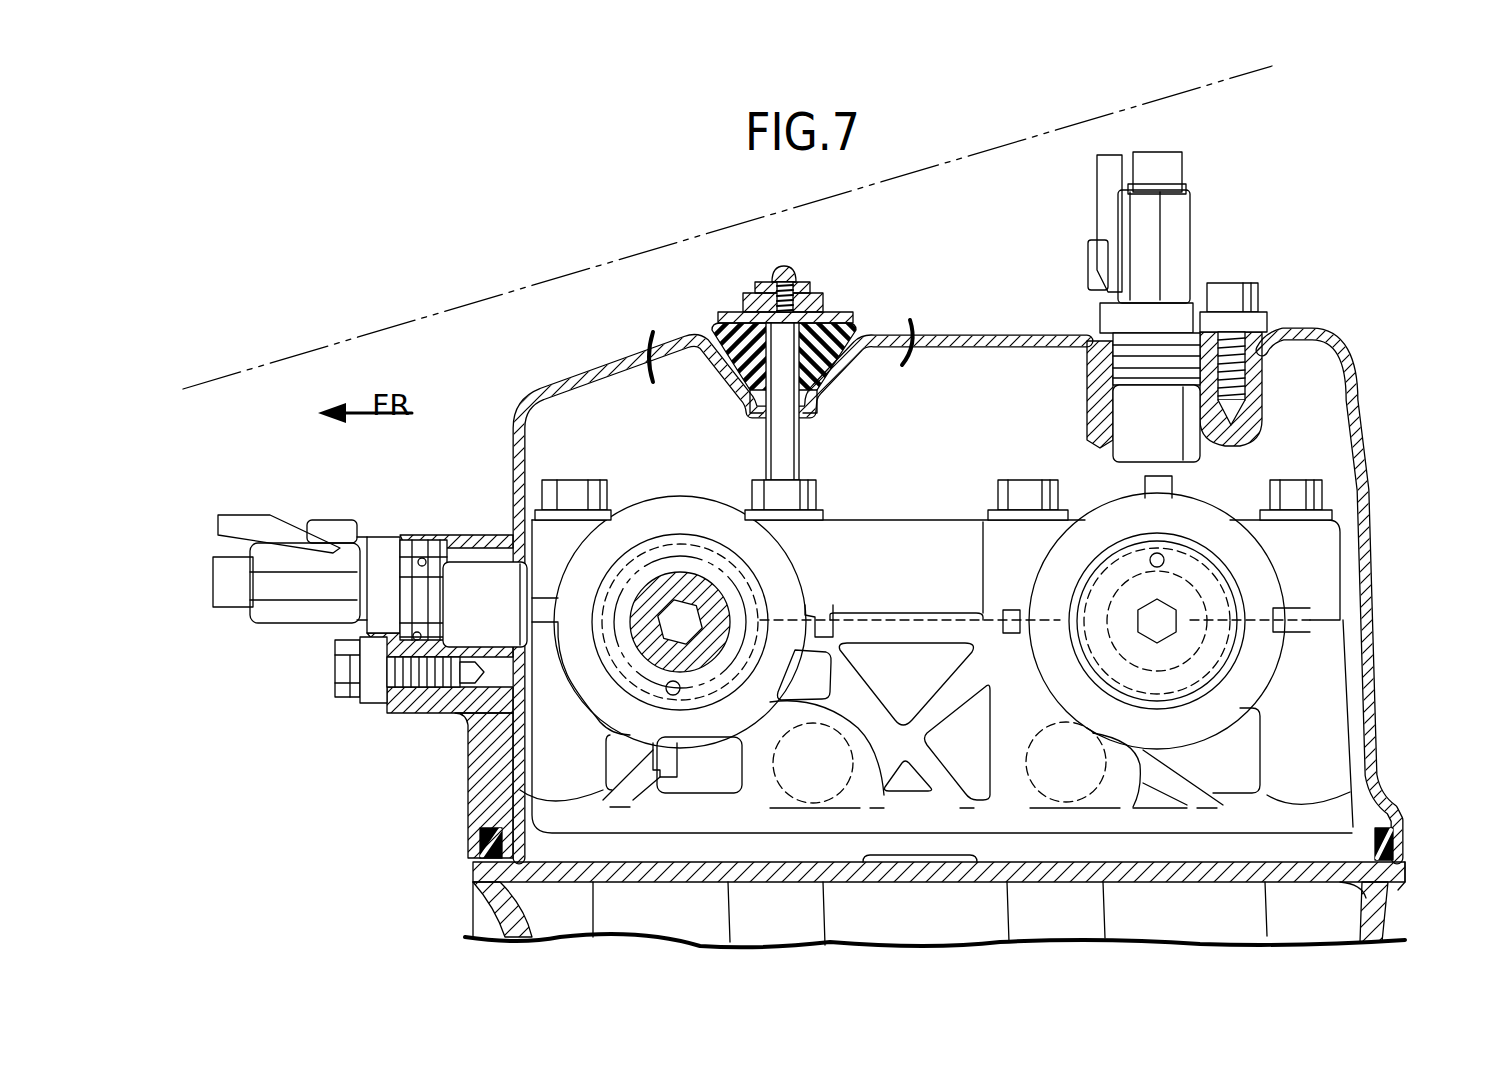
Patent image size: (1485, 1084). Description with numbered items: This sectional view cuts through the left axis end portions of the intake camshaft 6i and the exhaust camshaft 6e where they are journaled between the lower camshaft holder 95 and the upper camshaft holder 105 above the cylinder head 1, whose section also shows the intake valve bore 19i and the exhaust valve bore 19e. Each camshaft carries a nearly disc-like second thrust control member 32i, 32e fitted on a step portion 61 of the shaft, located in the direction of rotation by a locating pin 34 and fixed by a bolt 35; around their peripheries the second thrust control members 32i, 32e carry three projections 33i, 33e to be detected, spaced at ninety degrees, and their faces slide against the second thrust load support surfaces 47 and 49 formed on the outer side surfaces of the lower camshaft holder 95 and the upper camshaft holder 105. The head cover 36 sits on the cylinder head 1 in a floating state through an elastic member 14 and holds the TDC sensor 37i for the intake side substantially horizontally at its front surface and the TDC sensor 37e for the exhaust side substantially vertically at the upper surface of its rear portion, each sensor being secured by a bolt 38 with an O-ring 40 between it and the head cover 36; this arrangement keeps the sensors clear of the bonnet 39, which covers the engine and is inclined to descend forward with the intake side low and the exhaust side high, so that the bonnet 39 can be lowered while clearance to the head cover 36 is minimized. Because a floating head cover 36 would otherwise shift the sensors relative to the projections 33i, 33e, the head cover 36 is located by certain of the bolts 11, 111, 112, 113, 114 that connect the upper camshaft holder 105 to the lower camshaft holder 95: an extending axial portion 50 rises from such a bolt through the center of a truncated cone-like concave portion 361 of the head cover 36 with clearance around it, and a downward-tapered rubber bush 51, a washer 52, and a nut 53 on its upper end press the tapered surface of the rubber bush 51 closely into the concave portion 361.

The cylinder head 1 is at (1383, 898).
The bolt 11 is at (547, 837).
The intake camshaft 6i is at (673, 548).
The exhaust camshaft 6e is at (1165, 553).
The lower camshaft holder 95 is at (1350, 760).
The upper camshaft holder 105 is at (1342, 568).
The bolt 111 is at (585, 490).
The bolt 112 is at (804, 460).
The bolt 113 is at (1030, 490).
The bolt 114 is at (1300, 490).
The elastic member 14 is at (1396, 845).
The intake valve bore 19i is at (775, 790).
The exhaust valve bore 19e is at (1117, 755).
The second thrust control member 32i is at (803, 587).
The second thrust control member 32e is at (1272, 590).
The projection to be detected 33i is at (542, 612).
The projection to be detected 33e is at (1150, 493).
The locating pin 34 is at (680, 693).
The bolt 35 is at (652, 598).
The head cover 36 is at (958, 342).
The concave portion 361 is at (714, 334).
The TDC sensor 37i is at (380, 537).
The TDC sensor 37e is at (1108, 320).
The bolt 38 is at (348, 672).
The bonnet 39 is at (735, 224).
The O-ring 40 is at (430, 555).
The second thrust load support surface 47 is at (587, 750).
The second thrust load support surface 49 is at (822, 533).
The extending axial portion 50 is at (768, 440).
The rubber bush 51 is at (852, 342).
The washer 52 is at (833, 312).
The nut 53 is at (800, 284).
The step portion 61 is at (732, 560).